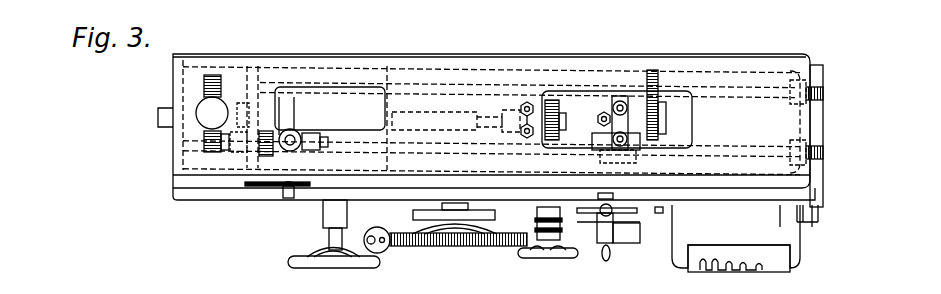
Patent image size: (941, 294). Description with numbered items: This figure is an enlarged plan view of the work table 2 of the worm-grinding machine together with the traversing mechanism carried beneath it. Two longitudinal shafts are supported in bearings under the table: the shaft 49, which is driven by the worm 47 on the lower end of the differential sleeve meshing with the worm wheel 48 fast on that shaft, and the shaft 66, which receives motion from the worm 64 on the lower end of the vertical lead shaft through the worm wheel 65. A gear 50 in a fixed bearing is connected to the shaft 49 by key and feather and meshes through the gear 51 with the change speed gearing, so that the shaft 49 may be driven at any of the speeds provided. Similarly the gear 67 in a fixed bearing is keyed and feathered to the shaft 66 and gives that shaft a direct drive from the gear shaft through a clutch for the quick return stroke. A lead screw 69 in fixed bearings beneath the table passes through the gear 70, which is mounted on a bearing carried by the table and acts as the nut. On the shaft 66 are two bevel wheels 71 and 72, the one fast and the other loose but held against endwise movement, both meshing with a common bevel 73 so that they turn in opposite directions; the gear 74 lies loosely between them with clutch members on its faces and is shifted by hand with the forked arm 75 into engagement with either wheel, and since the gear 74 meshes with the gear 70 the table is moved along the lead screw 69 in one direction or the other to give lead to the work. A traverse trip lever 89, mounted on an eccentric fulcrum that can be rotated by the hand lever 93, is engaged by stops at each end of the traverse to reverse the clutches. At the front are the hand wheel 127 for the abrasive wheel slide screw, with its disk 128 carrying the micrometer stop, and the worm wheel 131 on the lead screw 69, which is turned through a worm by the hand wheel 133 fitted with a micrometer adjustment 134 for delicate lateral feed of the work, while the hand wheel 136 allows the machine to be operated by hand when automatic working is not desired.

The work table 2 is at (173, 77).
The worm 47 is at (197, 107).
The worm wheel 48 is at (212, 74).
The shaft 49 is at (488, 90).
The gear 50 is at (653, 69).
The gear 51 is at (665, 133).
The worm 64 is at (199, 127).
The worm wheel 65 is at (203, 146).
The shaft 66 is at (240, 147).
The gear 67 is at (594, 140).
The lead screw 69 is at (158, 118).
The gear 70 is at (292, 111).
The bevel wheel 71 is at (304, 152).
The bevel wheel 72 is at (266, 155).
The common bevel 73 is at (284, 165).
The gear 74 is at (300, 136).
The forked arm 75 is at (304, 185).
The traverse trip lever 89 is at (613, 197).
The hand lever 93 is at (627, 244).
The hand wheel 127 is at (428, 246).
The disk 128 is at (413, 213).
The worm wheel 131 is at (562, 108).
The hand wheel 133 is at (532, 258).
The micrometer adjustment 134 is at (575, 233).
The hand wheel 136 is at (320, 261).